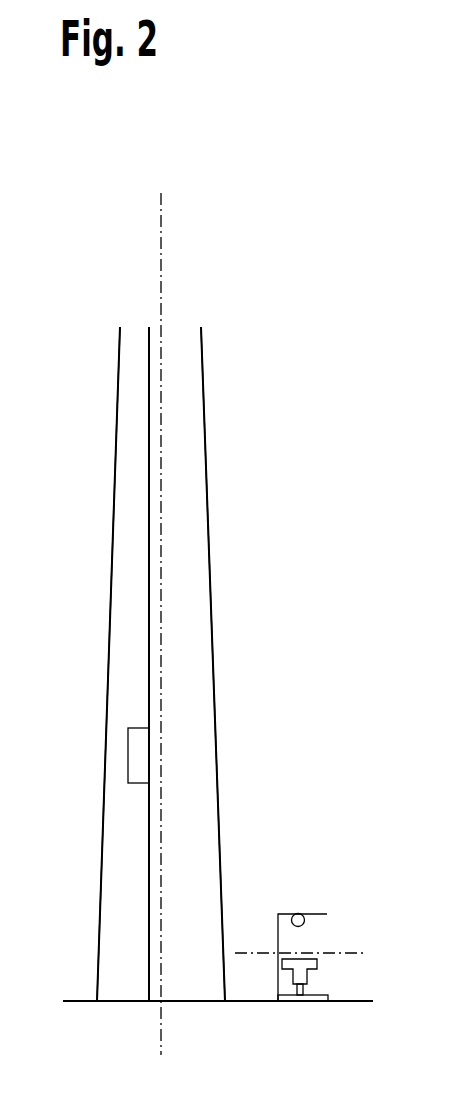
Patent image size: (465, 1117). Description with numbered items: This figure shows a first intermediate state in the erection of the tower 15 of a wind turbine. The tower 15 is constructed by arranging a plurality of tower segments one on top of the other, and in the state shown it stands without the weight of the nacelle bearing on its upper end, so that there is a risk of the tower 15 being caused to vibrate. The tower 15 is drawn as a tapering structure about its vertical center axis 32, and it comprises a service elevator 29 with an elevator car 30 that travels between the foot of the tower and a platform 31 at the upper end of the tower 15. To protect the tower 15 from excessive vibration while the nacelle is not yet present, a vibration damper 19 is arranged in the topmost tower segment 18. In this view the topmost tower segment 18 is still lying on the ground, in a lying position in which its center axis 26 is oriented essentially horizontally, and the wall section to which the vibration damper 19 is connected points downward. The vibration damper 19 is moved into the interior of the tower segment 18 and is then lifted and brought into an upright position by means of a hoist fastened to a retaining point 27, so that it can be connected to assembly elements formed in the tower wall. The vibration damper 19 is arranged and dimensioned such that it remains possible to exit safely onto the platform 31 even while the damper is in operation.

The tower 15 is at (233, 571).
The topmost tower segment 18 is at (278, 929).
The vibration damper 19 is at (306, 985).
The center axis 26 is at (244, 954).
The retaining point 27 is at (117, 393).
The service elevator 29 is at (149, 655).
The elevator car 30 is at (128, 757).
The platform 31 is at (277, 983).
The center axis 32 is at (161, 201).